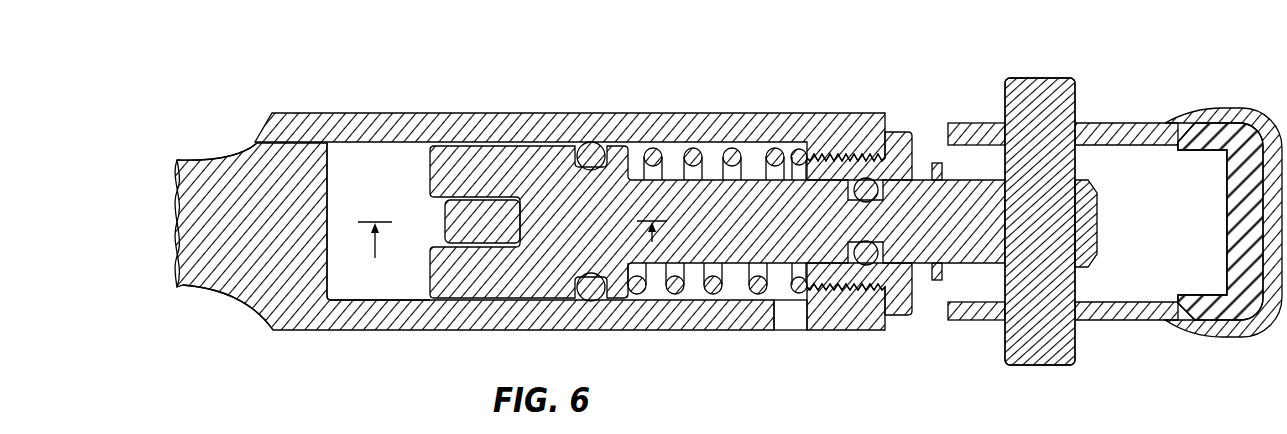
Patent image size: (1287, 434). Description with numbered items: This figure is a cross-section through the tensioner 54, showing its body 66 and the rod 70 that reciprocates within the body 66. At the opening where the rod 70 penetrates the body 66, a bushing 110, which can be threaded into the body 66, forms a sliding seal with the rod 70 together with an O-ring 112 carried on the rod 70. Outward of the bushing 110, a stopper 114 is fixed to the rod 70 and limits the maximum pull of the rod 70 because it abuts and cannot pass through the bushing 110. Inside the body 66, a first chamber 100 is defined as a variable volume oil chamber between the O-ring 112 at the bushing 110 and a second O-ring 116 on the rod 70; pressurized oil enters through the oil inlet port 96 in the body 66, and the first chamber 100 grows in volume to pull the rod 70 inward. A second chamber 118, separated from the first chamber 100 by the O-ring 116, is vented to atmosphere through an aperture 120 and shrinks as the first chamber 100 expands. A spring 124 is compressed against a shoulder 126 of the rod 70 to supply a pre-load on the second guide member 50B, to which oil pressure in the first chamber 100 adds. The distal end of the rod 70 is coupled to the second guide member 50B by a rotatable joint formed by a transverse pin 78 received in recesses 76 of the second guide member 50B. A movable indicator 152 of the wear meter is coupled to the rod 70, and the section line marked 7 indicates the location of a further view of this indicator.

The tensioner 54 is at (535, 70).
The body 66 is at (365, 112).
The rod 70 is at (1098, 227).
The recesses 76 is at (1015, 125).
The pin 78 is at (1048, 92).
The oil inlet port 96 is at (782, 315).
The first chamber 100 is at (713, 148).
The bushing 110 is at (905, 132).
The O-ring 112 is at (863, 171).
The stopper 114 is at (938, 282).
The O-ring 116 is at (602, 143).
The second chamber 118 is at (391, 162).
The aperture 120 is at (257, 146).
The spring 124 is at (678, 147).
The shoulder 126 is at (650, 272).
The movable indicator 152 is at (448, 226).
The section line 7 is at (512, 227).
The second guide member 50B is at (1203, 108).